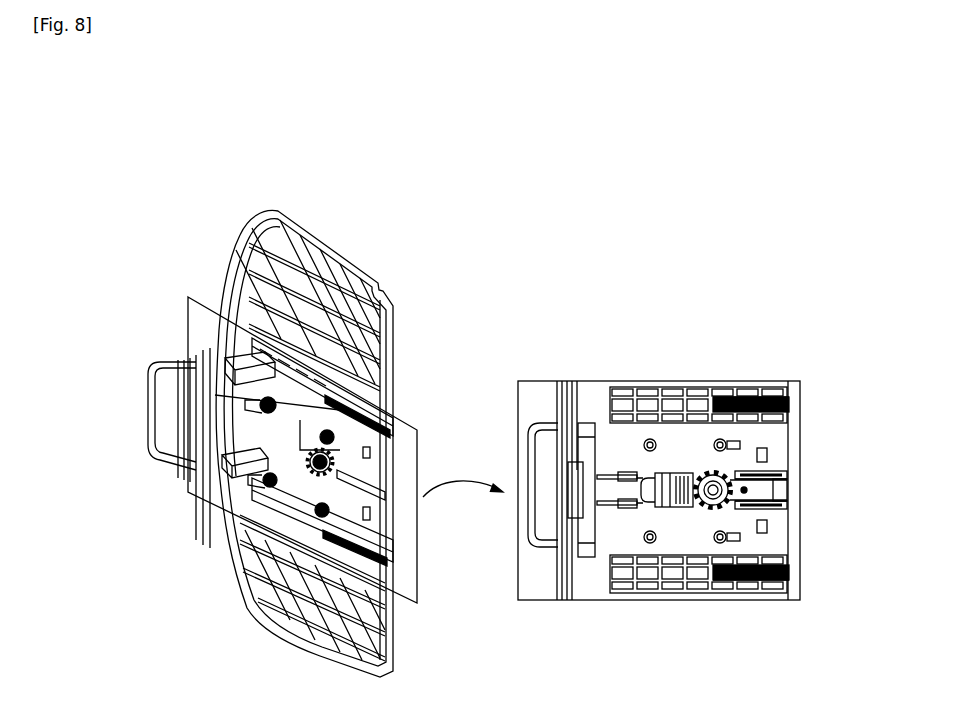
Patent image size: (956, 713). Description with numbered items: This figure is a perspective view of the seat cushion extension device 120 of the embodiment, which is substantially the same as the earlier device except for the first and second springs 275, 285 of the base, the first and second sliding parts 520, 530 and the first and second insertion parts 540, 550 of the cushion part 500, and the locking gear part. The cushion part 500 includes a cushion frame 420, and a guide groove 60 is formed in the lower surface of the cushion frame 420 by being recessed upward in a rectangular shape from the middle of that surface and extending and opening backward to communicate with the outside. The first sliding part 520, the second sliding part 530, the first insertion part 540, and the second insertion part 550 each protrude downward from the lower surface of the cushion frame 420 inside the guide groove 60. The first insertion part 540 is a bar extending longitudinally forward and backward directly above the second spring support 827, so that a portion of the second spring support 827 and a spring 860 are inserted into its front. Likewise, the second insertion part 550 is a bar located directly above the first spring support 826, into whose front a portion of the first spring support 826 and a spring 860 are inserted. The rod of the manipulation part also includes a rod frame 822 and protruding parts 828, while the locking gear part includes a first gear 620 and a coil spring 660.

The seat cushion extension device 120 is at (371, 147).
The guide groove 60 is at (355, 386).
The cushion part 500 is at (100, 365).
The first sliding part 520 is at (272, 394).
The first insertion part 540 is at (300, 438).
The second insertion part 550 is at (312, 466).
The second sliding part 530 is at (257, 503).
The cushion frame 420 is at (252, 573).
The rod frame 822 is at (535, 487).
The protruding parts 828 is at (672, 473).
The second spring support 827 is at (688, 470).
The first spring support 826 is at (698, 510).
The first gear 620 is at (709, 513).
The coil spring 660 is at (719, 545).
The first spring 275 is at (750, 396).
The second spring 285 is at (749, 582).
The springs 860 is at (788, 473).